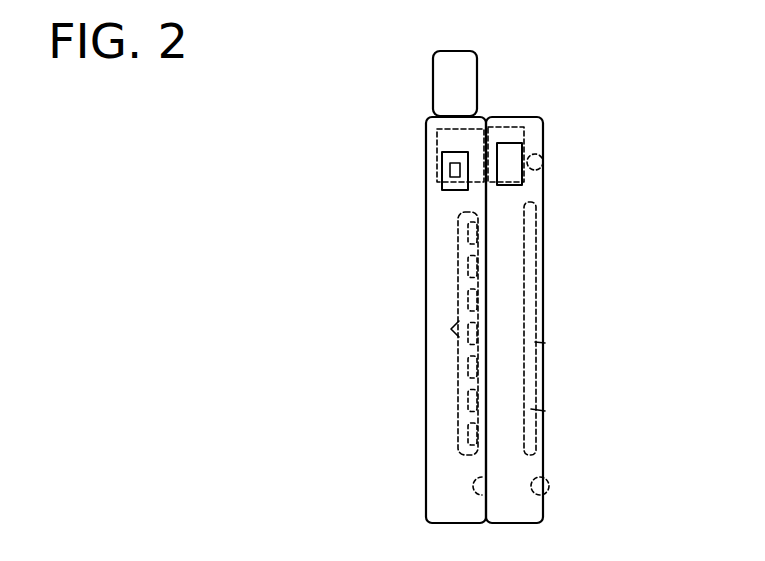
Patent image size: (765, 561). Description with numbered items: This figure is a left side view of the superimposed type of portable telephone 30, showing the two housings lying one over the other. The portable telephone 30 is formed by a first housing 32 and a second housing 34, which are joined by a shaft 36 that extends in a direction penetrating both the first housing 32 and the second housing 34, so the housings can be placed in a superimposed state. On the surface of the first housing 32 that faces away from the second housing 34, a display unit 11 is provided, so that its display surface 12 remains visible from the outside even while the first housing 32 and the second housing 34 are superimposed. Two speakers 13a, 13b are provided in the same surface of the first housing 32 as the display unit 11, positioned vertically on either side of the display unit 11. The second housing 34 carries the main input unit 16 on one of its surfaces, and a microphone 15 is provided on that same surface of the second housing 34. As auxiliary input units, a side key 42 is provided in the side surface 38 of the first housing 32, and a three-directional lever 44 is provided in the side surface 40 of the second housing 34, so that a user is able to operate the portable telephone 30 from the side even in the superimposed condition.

The superimposed type of portable telephone 30 is at (290, 426).
The first housing 32 is at (544, 283).
The second housing 34 is at (426, 313).
The shaft 36 is at (507, 127).
The side surface 38 is at (513, 230).
The side surface 40 is at (448, 230).
The side key 42 is at (522, 151).
The 3-directional lever 44 is at (442, 172).
The display unit 11 is at (545, 411).
The display surface 12 is at (545, 343).
The speaker 13a is at (549, 487).
The speaker 13b is at (544, 162).
The microphone 15 is at (473, 487).
The main input unit 16 is at (457, 381).